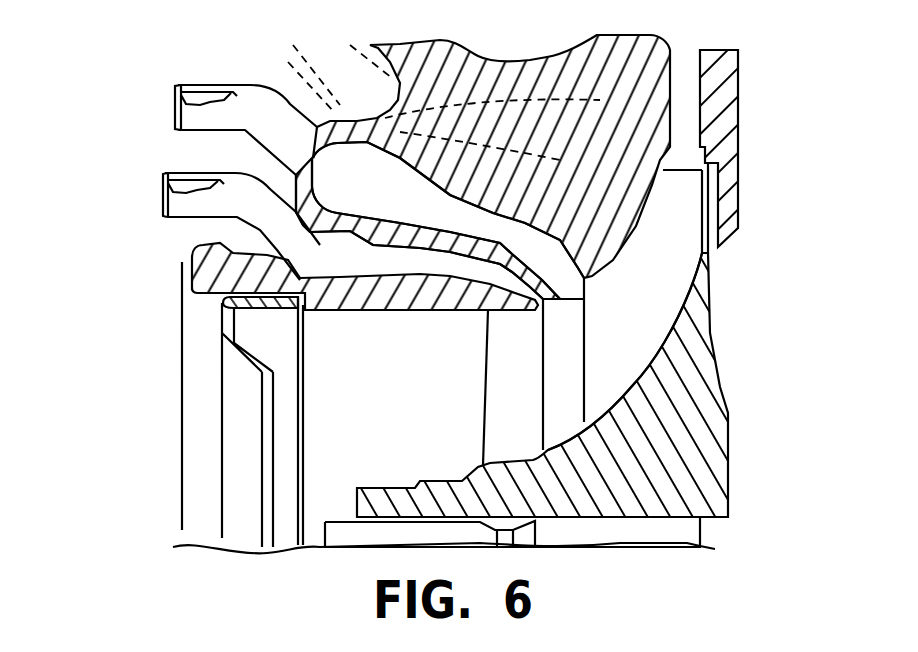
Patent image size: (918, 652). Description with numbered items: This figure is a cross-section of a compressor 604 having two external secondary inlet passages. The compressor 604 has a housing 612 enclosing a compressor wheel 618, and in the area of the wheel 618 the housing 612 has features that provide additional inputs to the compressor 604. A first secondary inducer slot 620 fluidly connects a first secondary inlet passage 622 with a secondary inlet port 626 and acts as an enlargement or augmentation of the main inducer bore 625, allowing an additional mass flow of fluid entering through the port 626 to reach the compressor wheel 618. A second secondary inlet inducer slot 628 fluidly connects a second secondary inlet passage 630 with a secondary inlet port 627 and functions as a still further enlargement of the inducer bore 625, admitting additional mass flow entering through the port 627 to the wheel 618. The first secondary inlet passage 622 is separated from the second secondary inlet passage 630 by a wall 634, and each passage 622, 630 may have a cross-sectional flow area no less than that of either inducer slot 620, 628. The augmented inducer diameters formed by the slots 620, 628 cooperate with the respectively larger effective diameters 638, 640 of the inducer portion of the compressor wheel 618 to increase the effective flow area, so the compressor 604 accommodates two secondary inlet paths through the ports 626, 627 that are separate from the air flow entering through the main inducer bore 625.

The compressor 604 is at (178, 514).
The housing 612 is at (593, 176).
The compressor wheel 618 is at (663, 485).
The first secondary inducer slot 620 is at (535, 312).
The first secondary inlet passage 622 is at (363, 274).
The main inducer bore 625 is at (397, 312).
The secondary inlet port 626 is at (152, 192).
The secondary inlet port 627 is at (160, 100).
The second secondary inlet inducer slot 628 is at (573, 278).
The second secondary inlet passage 630 is at (390, 203).
The wall 634 is at (520, 260).
The larger effective diameter 638 is at (567, 343).
The larger effective diameter 640 is at (540, 423).